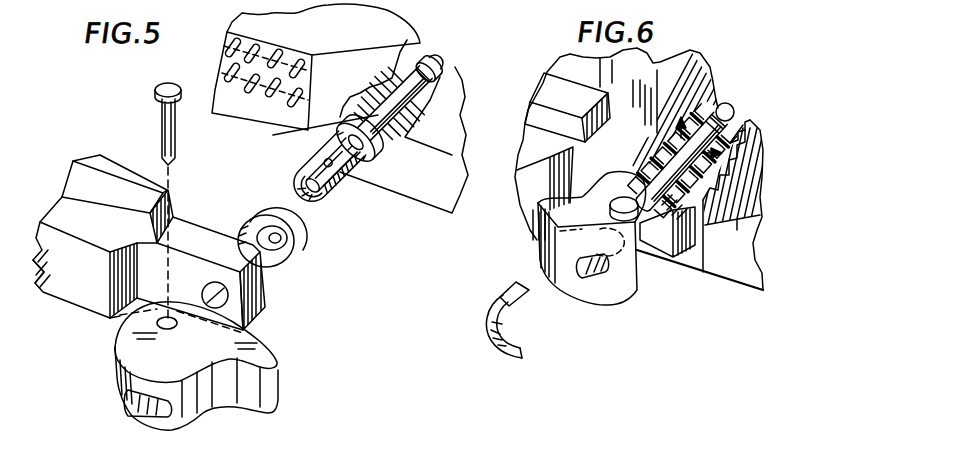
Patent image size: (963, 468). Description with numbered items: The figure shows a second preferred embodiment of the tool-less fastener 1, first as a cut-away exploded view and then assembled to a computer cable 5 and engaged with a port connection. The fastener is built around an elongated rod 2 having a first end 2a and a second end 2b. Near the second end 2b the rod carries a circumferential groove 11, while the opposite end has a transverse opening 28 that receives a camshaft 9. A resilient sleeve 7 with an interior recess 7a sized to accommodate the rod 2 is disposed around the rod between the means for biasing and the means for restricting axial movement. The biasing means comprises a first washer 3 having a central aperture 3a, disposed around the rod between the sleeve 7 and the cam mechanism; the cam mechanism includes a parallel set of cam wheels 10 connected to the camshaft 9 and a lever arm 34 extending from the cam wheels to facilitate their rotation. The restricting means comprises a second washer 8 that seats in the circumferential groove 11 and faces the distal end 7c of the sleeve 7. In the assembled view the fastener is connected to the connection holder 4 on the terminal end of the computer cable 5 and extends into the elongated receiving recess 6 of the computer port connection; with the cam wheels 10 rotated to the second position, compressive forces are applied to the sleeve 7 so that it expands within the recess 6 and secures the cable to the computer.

In FIG. 6, the tool-less fastener 1 is at (634, 316).
In FIG. 5, the elongated rod 2 is at (352, 172).
In FIG. 5, the first end 2a is at (310, 220).
In FIG. 6, the first end 2a is at (537, 233).
In FIG. 5, the second end 2b is at (448, 61).
In FIG. 6, the second end 2b is at (733, 110).
In FIG. 5, the first washer 3 is at (252, 218).
In FIG. 5, the central aperture 3a is at (272, 264).
In FIG. 5, the connection holder 4 is at (266, 305).
In FIG. 6, the connection holder 4 is at (694, 250).
In FIG. 5, the computer cable 5 is at (42, 290).
In FIG. 5, the elongated receiving recess 6 is at (456, 57).
In FIG. 6, the elongated receiving recess 6 is at (748, 108).
In FIG. 5, the resilient sleeve 7 is at (312, 218).
In FIG. 6, the resilient sleeve 7 is at (730, 196).
In FIG. 5, the interior recess 7a is at (296, 238).
In FIG. 5, the distal end 7c is at (356, 178).
In FIG. 5, the second washer 8 is at (385, 148).
In FIG. 5, the camshaft 9 is at (162, 123).
In FIG. 5, the cam wheels 10 is at (116, 362).
In FIG. 5, the circumferential groove 11 is at (421, 57).
In FIG. 6, the circumferential groove 11 is at (718, 106).
In FIG. 5, the transverse opening 28 is at (310, 136).
In FIG. 5, the lever arm 34 is at (260, 415).
In FIG. 6, the lever arm 34 is at (538, 258).